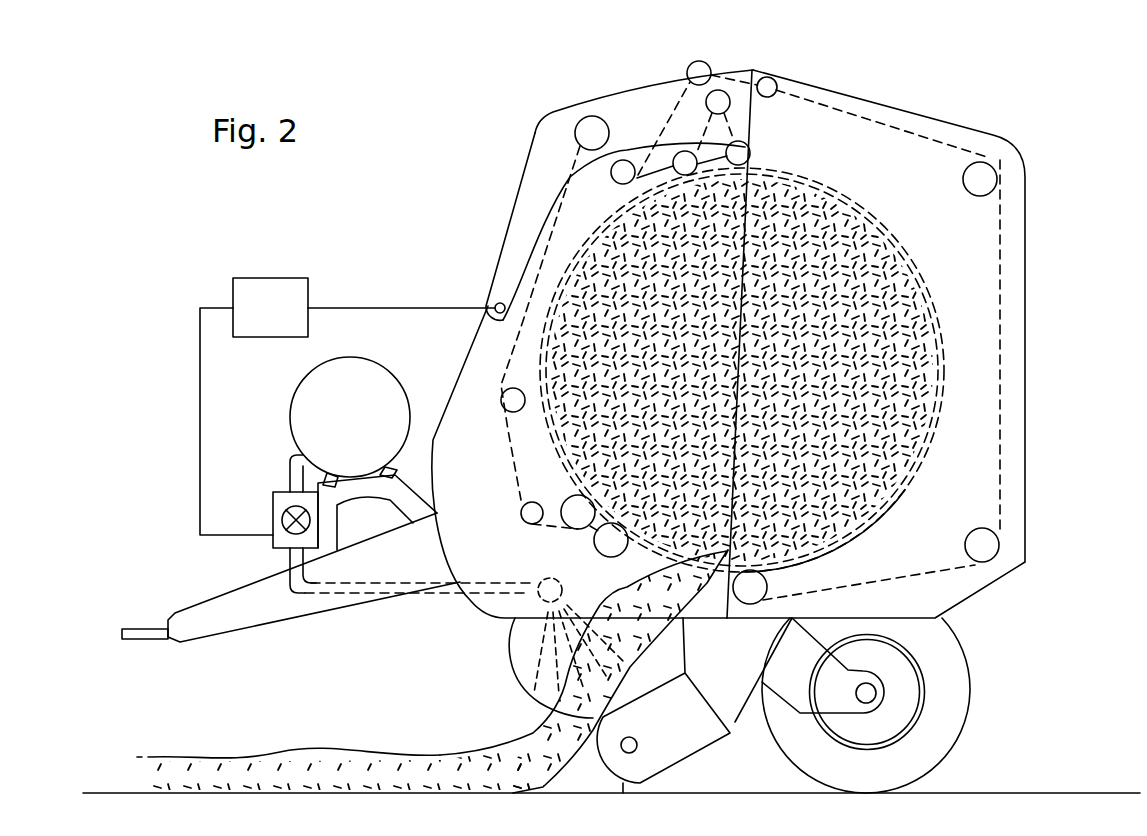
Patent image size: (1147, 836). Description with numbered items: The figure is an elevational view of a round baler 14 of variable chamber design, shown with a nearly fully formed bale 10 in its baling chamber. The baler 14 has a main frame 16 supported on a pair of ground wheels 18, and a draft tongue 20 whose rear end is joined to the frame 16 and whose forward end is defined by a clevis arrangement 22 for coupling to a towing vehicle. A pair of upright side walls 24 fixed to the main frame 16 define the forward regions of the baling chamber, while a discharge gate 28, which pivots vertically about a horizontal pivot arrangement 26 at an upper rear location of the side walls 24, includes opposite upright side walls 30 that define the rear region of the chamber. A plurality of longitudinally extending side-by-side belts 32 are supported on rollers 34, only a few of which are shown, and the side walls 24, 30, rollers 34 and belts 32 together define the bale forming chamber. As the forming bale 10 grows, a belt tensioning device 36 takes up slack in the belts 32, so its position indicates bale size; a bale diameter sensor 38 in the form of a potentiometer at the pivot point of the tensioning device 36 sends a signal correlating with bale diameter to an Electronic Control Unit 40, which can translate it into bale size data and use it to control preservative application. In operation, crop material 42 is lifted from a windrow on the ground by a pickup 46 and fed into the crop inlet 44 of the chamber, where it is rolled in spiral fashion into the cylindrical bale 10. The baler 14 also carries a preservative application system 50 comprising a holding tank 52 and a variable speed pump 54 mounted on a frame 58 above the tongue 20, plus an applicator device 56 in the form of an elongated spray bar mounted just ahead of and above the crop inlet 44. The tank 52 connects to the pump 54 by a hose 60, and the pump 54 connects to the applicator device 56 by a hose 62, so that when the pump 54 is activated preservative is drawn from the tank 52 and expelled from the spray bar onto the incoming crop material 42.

The bale 10 is at (932, 433).
The round baler 14 is at (928, 70).
The main frame 16 is at (816, 682).
The ground wheels 18 is at (953, 712).
The draft tongue 20 is at (227, 625).
The clevis arrangement 22 is at (133, 628).
The upright side walls 24 is at (633, 103).
The horizontal pivot arrangement 26 is at (777, 82).
The discharge gate 28 is at (1025, 300).
The gate side walls 30 is at (922, 168).
The belts 32 is at (998, 383).
The rollers 34 is at (583, 118).
The belt tensioning device 36 is at (540, 213).
The bale diameter sensor 38 is at (493, 296).
The Electronic Control Unit 40 is at (288, 282).
The crop material 42 is at (322, 758).
The crop inlet 44 is at (622, 585).
The pickup 46 is at (640, 748).
The preservative application system 50 is at (268, 400).
The holding tank 52 is at (392, 373).
The variable speed pump 54 is at (273, 505).
The applicator device 56 is at (556, 577).
The frame 58 is at (402, 493).
The hose 60 is at (293, 468).
The hose 62 is at (442, 593).